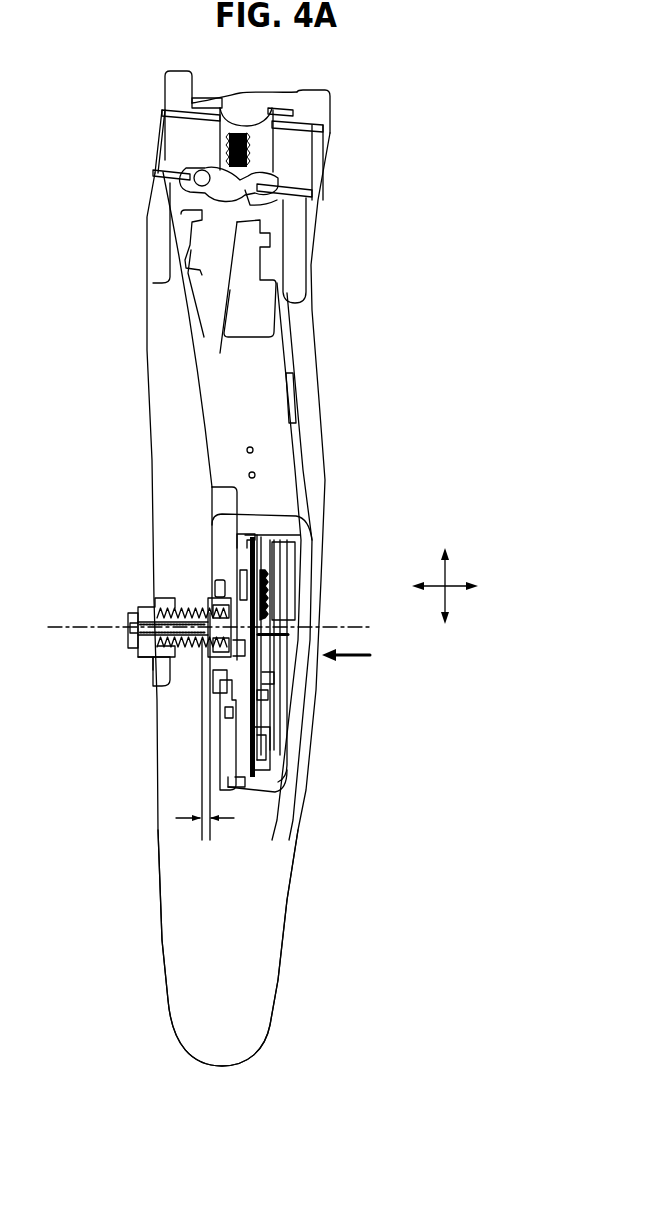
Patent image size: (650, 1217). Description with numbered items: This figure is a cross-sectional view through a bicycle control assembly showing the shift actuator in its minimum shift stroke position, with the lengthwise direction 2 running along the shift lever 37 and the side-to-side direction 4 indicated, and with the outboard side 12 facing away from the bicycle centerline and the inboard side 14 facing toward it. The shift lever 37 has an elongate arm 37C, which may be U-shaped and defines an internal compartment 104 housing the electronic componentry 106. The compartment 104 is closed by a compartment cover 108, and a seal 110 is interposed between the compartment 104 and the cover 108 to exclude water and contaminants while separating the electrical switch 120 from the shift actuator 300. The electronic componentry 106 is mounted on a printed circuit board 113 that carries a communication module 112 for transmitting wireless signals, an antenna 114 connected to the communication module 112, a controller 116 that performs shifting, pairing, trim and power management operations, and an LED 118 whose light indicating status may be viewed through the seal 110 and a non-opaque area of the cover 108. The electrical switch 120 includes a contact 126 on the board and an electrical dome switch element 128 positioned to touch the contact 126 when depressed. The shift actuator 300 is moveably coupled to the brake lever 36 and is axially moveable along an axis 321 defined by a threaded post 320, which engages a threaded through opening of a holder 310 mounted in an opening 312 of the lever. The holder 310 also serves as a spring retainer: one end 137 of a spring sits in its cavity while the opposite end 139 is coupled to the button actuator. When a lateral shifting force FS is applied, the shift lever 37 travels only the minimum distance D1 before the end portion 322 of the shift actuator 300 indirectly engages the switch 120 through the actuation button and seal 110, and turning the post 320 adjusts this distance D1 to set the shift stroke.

The outboard side 12 is at (311, 246).
The inboard side 14 is at (148, 220).
The brake lever 36 is at (287, 899).
The shift lever 37 is at (286, 460).
The elongate arm 37C is at (289, 776).
The internal compartment 104 is at (272, 711).
The electronic componentry 106 is at (290, 594).
The compartment cover 108 is at (218, 745).
The seal 110 is at (262, 792).
The communication module 112 is at (262, 693).
The printed circuit board 113 is at (262, 677).
The antenna 114 is at (262, 731).
The controller 116 is at (273, 573).
The LED 118 is at (245, 708).
The electrical switch 120 is at (223, 567).
The contact 126 is at (228, 590).
The electrical dome switch element 128 is at (235, 648).
The end of the spring 137 is at (155, 598).
The opposite end of the spring 139 is at (288, 634).
The shift actuator 300 is at (200, 600).
The holder 310 is at (138, 656).
The opening 312 is at (149, 661).
The post 320 is at (138, 607).
The axis 321 is at (336, 627).
The end portion of the shift actuator 322 is at (240, 637).
The lengthwise direction 2 is at (452, 598).
The side-to-side direction 4 is at (456, 584).
The lateral shifting force FS is at (370, 655).
The minimum distance D1 is at (208, 822).